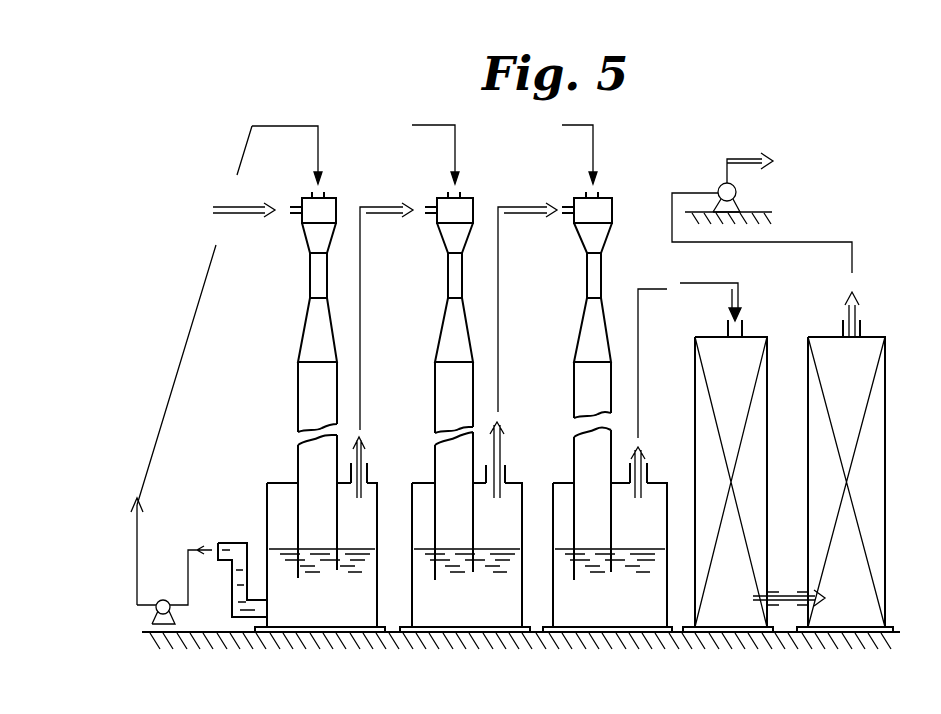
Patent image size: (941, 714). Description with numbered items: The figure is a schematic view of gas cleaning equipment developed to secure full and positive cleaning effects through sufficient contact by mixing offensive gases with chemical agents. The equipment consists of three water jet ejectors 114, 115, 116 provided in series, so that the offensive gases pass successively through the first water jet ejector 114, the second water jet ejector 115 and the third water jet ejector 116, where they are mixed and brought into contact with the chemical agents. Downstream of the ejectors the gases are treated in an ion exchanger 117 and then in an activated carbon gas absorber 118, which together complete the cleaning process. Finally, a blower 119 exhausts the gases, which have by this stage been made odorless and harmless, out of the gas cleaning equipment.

The water jet ejector 114 is at (292, 338).
The water jet ejector 115 is at (428, 338).
The water jet ejector 116 is at (568, 338).
The ion exchanger 117 is at (686, 364).
The activated carbon gas absorber 118 is at (800, 368).
The blower 119 is at (742, 195).